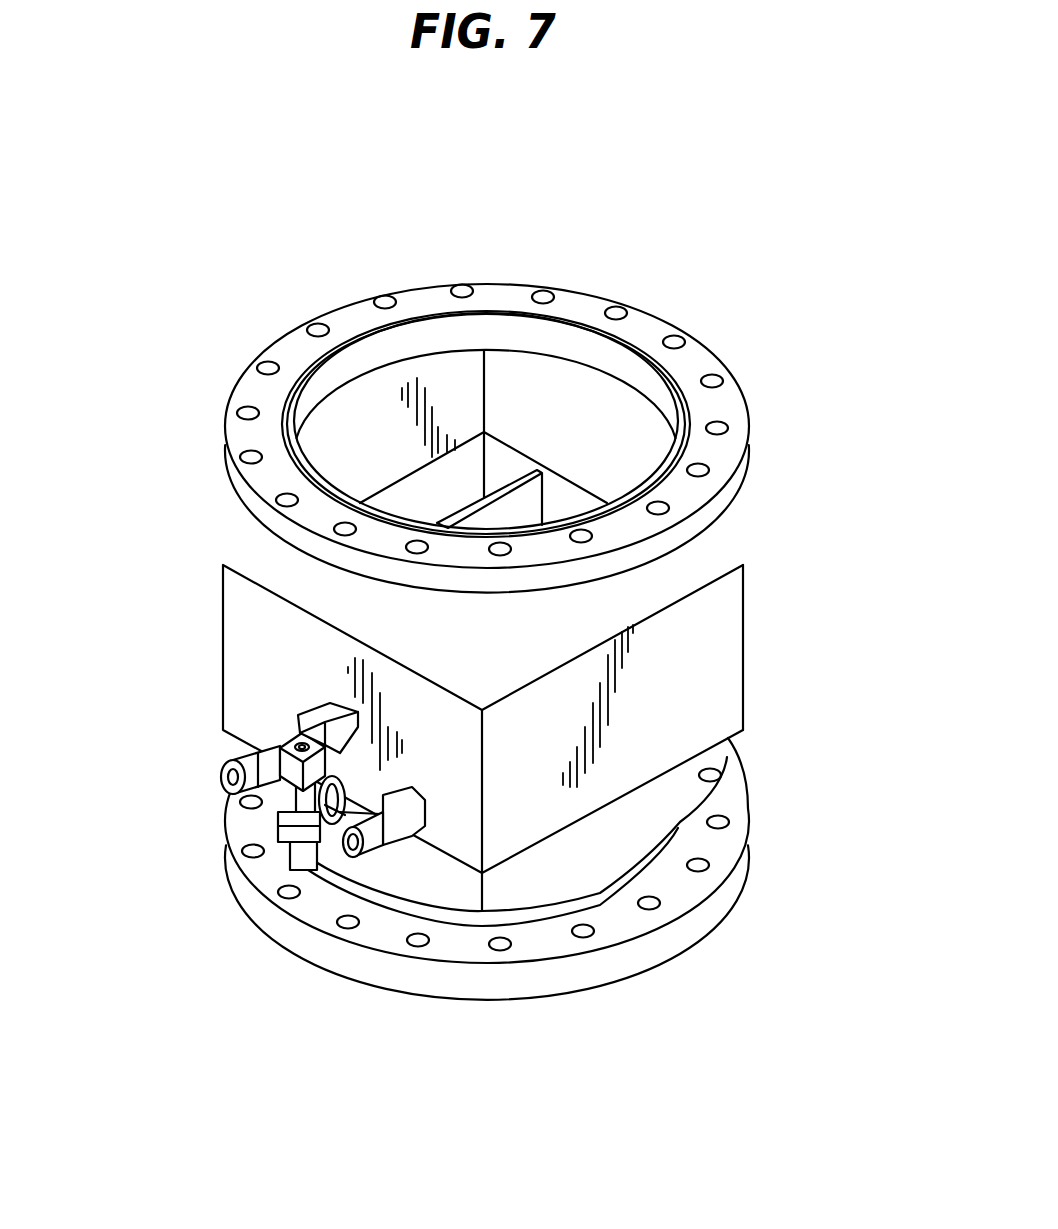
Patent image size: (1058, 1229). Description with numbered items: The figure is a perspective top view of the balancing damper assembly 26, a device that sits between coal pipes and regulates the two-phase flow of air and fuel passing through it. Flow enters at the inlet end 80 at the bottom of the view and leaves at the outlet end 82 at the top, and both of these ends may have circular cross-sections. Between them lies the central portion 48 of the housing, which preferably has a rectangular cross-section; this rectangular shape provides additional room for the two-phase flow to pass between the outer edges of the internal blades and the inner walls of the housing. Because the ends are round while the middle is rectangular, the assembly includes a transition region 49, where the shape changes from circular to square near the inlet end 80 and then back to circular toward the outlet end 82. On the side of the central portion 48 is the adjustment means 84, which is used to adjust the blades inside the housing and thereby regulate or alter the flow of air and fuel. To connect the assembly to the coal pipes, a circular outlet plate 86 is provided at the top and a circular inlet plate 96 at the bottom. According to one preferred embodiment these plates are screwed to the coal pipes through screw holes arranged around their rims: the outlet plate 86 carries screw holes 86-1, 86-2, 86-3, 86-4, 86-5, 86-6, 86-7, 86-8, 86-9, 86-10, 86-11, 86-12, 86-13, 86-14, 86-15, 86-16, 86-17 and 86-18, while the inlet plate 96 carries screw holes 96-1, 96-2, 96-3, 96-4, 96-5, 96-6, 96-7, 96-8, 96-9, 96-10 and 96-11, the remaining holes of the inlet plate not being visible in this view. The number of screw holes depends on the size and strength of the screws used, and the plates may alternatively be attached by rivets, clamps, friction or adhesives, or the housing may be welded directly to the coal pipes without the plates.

The balancing damper assembly 26 is at (732, 166).
The central portion 48 is at (748, 656).
The transition region 49 is at (728, 557).
The inlet end 80 is at (426, 1036).
The outlet end 82 is at (520, 352).
The adjustment means 84 is at (246, 828).
The outlet plate 86 is at (645, 328).
The screw hole 86-1 is at (720, 369).
The screw hole 86-2 is at (728, 424).
The screw hole 86-3 is at (709, 470).
The screw hole 86-4 is at (669, 508).
The screw hole 86-5 is at (583, 543).
The screw hole 86-6 is at (502, 556).
The screw hole 86-7 is at (416, 555).
The screw hole 86-8 is at (342, 536).
The screw hole 86-9 is at (283, 507).
The screw hole 86-10 is at (241, 459).
The screw hole 86-11 is at (238, 411).
The screw hole 86-12 is at (262, 362).
The screw hole 86-13 is at (314, 323).
The screw hole 86-14 is at (384, 294).
The screw hole 86-15 is at (462, 283).
The screw hole 86-16 is at (545, 289).
The screw hole 86-17 is at (615, 305).
The screw hole 86-18 is at (676, 334).
The inlet plate 96 is at (735, 790).
The screw hole 96-1 is at (721, 773).
The screw hole 96-2 is at (729, 822).
The screw hole 96-3 is at (709, 867).
The screw hole 96-4 is at (660, 906).
The screw hole 96-5 is at (590, 940).
The screw hole 96-6 is at (500, 953).
The screw hole 96-7 is at (418, 950).
The screw hole 96-8 is at (340, 930).
The screw hole 96-9 is at (280, 900).
The screw hole 96-10 is at (245, 858).
The screw hole 96-11 is at (240, 803).